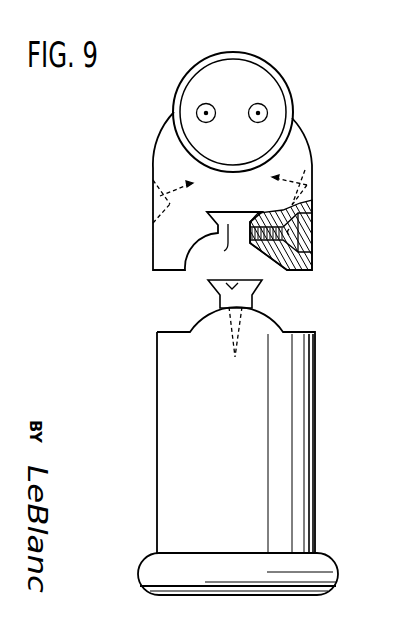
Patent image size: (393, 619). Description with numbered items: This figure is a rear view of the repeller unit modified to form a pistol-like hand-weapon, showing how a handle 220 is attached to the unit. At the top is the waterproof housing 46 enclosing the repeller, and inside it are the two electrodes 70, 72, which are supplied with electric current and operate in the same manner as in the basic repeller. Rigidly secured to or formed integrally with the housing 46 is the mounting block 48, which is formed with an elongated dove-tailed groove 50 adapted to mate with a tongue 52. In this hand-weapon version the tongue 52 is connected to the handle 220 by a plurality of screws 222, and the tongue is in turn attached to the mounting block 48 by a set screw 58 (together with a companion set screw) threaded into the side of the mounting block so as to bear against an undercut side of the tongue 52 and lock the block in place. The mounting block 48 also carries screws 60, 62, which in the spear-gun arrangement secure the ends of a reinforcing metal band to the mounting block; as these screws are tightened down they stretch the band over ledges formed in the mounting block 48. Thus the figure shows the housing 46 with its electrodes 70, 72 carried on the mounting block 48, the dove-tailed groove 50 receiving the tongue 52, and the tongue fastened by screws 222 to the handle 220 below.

The waterproof housing 46 is at (282, 80).
The electrode 70 is at (197, 113).
The electrode 72 is at (268, 115).
The mounting block 48 is at (167, 247).
The dove-tailed groove 50 is at (236, 245).
The set screw 58 is at (312, 228).
The screw 60 is at (312, 187).
The screw 62 is at (153, 196).
The tongue 52 is at (255, 285).
The handle 220 is at (173, 407).
The screws 222 is at (232, 335).